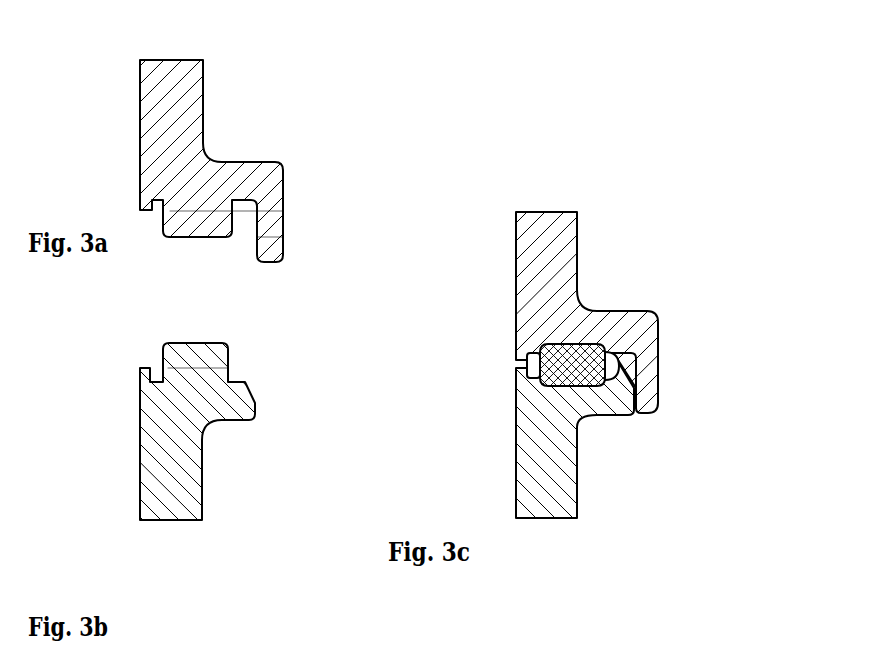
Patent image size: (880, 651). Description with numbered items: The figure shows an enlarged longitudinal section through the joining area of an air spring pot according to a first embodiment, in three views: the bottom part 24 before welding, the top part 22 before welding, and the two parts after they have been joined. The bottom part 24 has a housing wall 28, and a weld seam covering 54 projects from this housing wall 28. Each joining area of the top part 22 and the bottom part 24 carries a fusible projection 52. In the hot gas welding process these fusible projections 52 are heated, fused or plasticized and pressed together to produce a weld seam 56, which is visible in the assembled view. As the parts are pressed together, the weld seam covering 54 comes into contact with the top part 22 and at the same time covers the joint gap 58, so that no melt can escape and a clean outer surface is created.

In FIG. 3B, the top part 22 is at (192, 526).
In FIG. 3C, the top part 22 is at (592, 484).
In FIG. 3A, the bottom part 24 is at (184, 54).
In FIG. 3C, the bottom part 24 is at (569, 193).
In FIG. 3A, the housing wall 28 is at (192, 107).
In FIG. 3A, the fusible projection 52 is at (196, 231).
In FIG. 3B, the fusible projection 52 is at (192, 353).
In FIG. 3A, the weld seam covering 54 is at (283, 180).
In FIG. 3C, the weld seam covering 54 is at (660, 336).
In FIG. 3C, the weld seam 56 is at (577, 357).
In FIG. 3C, the joint gap 58 is at (622, 367).